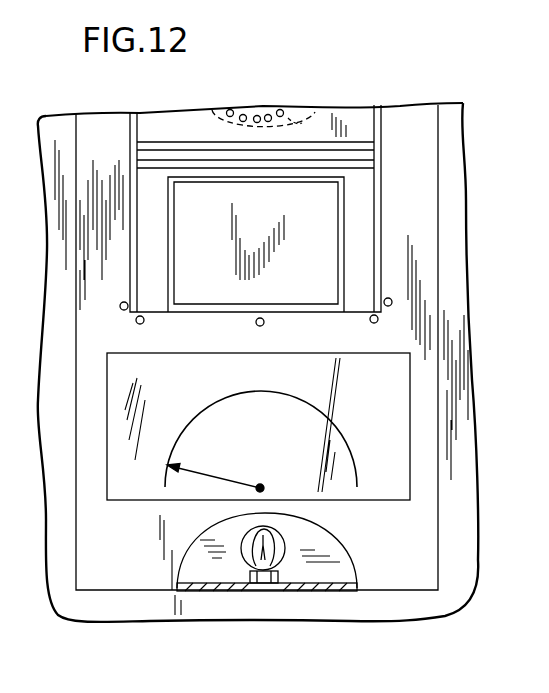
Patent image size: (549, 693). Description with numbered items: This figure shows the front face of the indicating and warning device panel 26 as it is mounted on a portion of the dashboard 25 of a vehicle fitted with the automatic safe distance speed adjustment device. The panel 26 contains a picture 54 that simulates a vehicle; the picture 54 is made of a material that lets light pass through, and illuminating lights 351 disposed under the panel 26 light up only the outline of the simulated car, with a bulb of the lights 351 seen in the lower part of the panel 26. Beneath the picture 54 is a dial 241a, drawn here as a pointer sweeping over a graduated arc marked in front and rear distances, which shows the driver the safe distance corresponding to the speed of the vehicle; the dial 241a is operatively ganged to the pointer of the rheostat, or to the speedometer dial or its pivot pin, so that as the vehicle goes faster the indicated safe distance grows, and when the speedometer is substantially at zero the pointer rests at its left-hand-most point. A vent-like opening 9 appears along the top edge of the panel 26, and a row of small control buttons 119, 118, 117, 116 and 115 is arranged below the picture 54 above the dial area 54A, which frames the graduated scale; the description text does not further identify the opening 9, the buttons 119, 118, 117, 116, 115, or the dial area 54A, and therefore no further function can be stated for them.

The dashboard 25 is at (467, 508).
The picture 54 is at (378, 200).
The vent opening 9 is at (316, 109).
The push button 119 is at (123, 311).
The push button 118 is at (144, 322).
The push button 117 is at (257, 325).
The push button 116 is at (370, 321).
The push button 115 is at (392, 305).
The indicator dial panel 54A is at (143, 490).
The dial 241a is at (213, 474).
The illuminating lights 351 is at (306, 525).
The indicating and warning device panel 26 is at (403, 557).